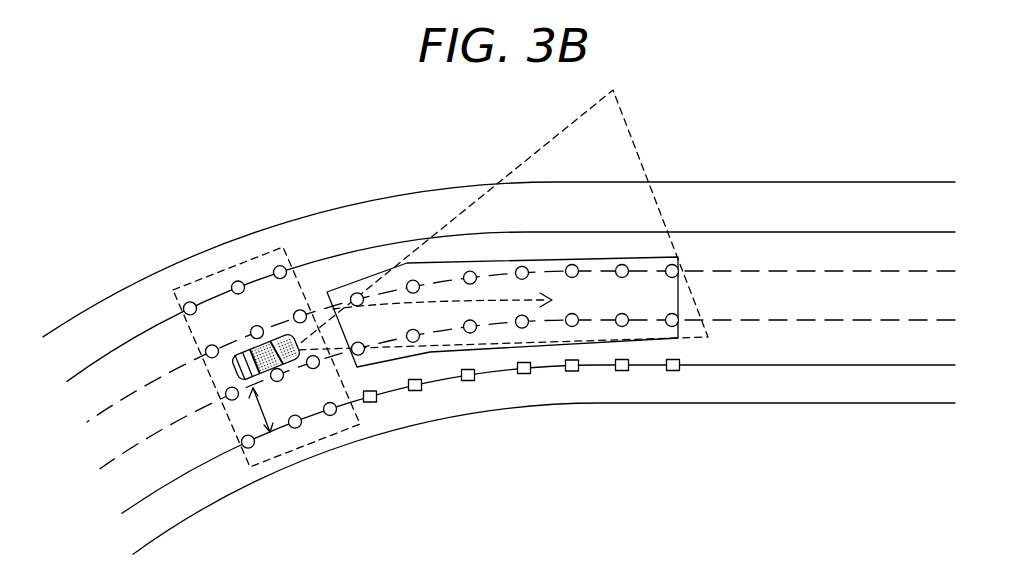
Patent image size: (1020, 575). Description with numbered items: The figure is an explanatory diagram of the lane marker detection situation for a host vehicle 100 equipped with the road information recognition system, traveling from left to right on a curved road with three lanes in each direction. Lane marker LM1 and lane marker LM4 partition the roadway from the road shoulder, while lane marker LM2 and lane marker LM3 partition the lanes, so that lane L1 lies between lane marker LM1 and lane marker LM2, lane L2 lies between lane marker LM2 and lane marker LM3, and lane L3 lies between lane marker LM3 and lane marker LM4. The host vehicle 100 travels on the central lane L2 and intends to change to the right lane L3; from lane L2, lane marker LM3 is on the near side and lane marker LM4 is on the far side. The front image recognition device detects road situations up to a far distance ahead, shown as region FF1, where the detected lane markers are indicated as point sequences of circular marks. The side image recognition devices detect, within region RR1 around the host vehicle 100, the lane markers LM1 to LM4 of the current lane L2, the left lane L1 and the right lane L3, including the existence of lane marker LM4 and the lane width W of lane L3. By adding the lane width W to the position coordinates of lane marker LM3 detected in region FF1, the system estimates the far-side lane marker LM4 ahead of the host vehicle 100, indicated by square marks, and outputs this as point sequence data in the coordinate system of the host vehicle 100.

The host vehicle 100 is at (278, 338).
The region RR1 is at (190, 283).
The region FF1 is at (597, 352).
The lane width W is at (255, 412).
The lane L1 is at (765, 259).
The lane L2 is at (765, 303).
The lane L3 is at (765, 354).
The lane marker LM1 is at (818, 232).
The lane marker LM2 is at (815, 275).
The lane marker LM3 is at (815, 320).
The lane marker LM4 is at (815, 367).